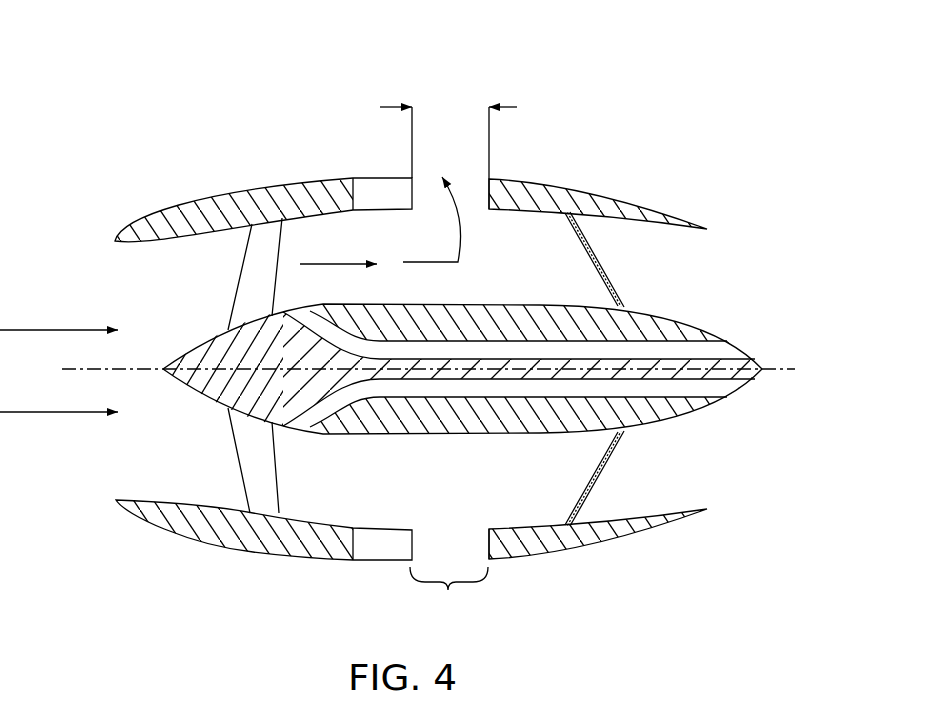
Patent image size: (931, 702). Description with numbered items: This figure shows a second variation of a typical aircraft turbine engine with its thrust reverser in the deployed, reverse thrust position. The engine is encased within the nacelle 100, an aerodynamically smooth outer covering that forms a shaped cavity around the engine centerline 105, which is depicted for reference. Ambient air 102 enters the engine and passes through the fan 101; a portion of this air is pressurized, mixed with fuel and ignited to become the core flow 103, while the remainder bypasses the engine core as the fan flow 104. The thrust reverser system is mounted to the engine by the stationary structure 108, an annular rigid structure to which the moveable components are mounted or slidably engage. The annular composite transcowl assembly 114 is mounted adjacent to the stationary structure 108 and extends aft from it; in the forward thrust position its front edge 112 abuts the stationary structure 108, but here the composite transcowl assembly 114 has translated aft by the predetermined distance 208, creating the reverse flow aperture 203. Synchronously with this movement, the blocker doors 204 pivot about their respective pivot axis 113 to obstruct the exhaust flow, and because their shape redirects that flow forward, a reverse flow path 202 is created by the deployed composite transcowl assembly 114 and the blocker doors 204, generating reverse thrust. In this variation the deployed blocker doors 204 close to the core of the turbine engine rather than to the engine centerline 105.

The nacelle 100 is at (550, 120).
The fan 101 is at (262, 230).
The ambient air 102 is at (63, 330).
The core flow 103 is at (376, 341).
The fan flow 104 is at (353, 263).
The engine centerline 105 is at (795, 369).
The stationary structure 108 is at (377, 178).
The front edge 112 is at (488, 188).
The pivot axis 113 is at (583, 288).
The composite transcowl assembly 114 is at (558, 188).
The reverse flow path 202 is at (458, 262).
The reverse flow aperture 203 is at (449, 597).
The blocker door 204 is at (611, 282).
The predetermined distance 208 is at (448, 136).